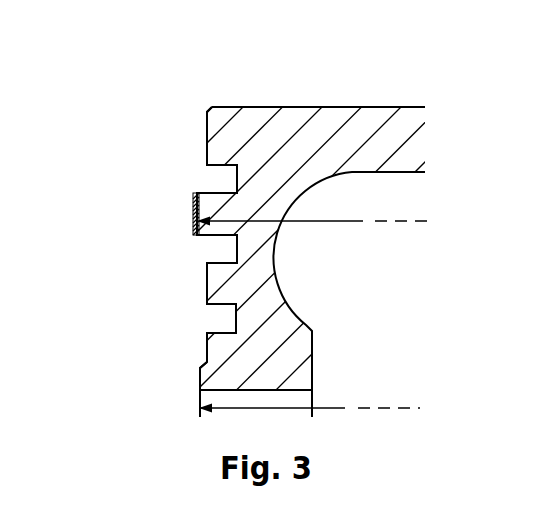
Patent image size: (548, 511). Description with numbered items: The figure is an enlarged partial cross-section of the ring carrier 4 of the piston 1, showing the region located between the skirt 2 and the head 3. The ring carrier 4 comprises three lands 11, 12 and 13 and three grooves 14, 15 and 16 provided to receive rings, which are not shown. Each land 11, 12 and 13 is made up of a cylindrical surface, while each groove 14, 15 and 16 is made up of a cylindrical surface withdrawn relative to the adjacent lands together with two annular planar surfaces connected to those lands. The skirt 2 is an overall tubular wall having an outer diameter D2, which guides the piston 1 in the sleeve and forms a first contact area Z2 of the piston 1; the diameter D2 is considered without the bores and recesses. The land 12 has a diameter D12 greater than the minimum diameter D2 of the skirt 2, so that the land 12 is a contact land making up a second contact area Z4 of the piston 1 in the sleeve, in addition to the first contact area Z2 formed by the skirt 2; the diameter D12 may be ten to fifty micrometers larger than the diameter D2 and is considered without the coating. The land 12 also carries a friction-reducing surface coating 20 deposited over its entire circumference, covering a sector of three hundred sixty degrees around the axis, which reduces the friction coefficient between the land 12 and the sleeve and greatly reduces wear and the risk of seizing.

The piston 1 is at (98, 92).
The skirt 2 is at (200, 372).
The head 3 is at (318, 130).
The ring carrier 4 is at (122, 171).
The land 11 is at (207, 127).
The land 12 is at (204, 211).
The land 13 is at (206, 278).
The groove 14 is at (195, 175).
The groove 15 is at (190, 255).
The groove 16 is at (192, 322).
The friction-reducing surface coating 20 is at (193, 203).
The second contact area Z4 is at (110, 221).
The first contact area Z2 is at (118, 398).
The diameter of the land D12 is at (313, 208).
The outer diameter of the skirt D2 is at (309, 395).